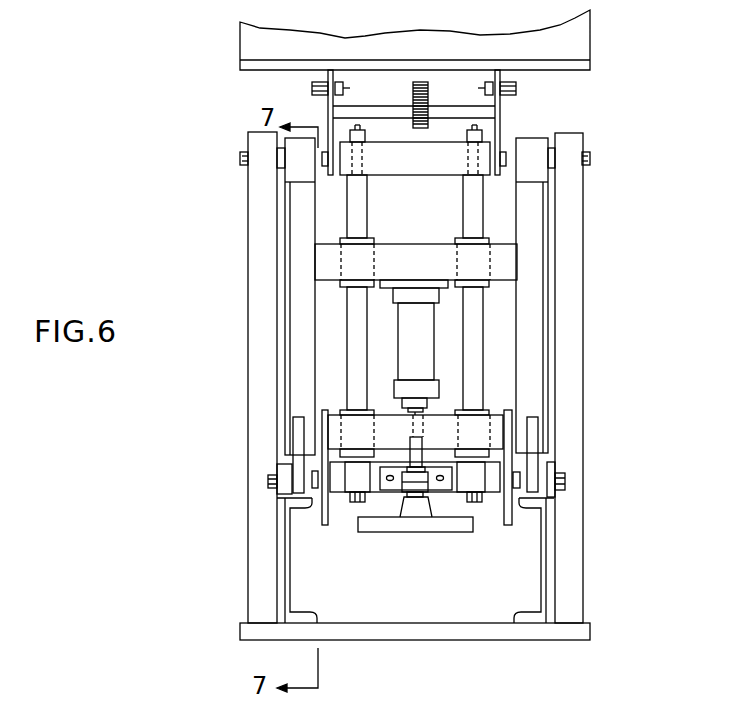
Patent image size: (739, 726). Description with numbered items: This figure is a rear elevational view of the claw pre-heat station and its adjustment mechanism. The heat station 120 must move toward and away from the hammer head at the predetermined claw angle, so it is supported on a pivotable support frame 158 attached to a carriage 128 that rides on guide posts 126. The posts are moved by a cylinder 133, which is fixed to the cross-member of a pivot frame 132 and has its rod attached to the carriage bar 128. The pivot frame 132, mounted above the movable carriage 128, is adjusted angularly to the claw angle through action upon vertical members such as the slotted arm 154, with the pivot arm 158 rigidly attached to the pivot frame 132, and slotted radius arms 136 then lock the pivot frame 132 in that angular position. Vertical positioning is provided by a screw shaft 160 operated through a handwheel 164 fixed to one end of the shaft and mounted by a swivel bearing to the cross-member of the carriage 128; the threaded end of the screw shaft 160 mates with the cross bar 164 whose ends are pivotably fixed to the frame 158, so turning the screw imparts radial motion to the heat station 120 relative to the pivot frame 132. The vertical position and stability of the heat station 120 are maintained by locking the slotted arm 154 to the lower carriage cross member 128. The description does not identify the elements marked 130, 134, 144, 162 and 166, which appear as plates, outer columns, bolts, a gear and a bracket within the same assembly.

The heat station 120 is at (585, 40).
The guide posts 126 is at (463, 222).
The carriage 128 is at (396, 165).
The plates 130 is at (432, 266).
The pivot frame 132 is at (287, 366).
The cylinder 133 is at (430, 339).
The outer frame columns 134 is at (252, 235).
The slotted radius arms 136 is at (282, 468).
The bolts 144 is at (350, 88).
The vertical member / slotted arm 154 is at (325, 110).
The pivotable support frame 158 is at (355, 132).
The screw shaft 160 is at (416, 448).
The gear 162 is at (420, 80).
The handwheel / cross bar 164 is at (459, 110).
The bracket 166 is at (395, 480).